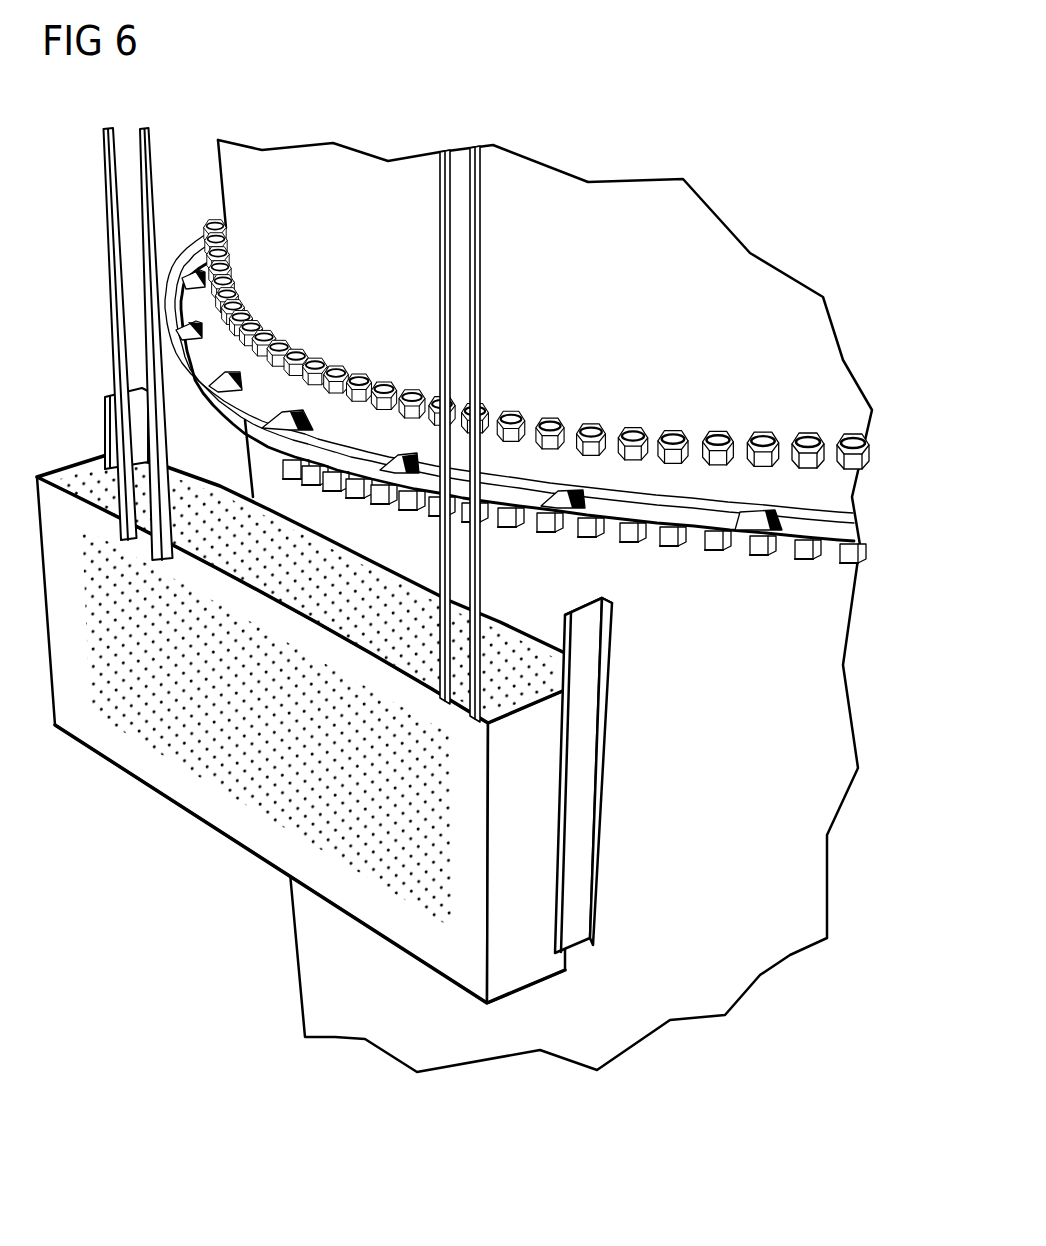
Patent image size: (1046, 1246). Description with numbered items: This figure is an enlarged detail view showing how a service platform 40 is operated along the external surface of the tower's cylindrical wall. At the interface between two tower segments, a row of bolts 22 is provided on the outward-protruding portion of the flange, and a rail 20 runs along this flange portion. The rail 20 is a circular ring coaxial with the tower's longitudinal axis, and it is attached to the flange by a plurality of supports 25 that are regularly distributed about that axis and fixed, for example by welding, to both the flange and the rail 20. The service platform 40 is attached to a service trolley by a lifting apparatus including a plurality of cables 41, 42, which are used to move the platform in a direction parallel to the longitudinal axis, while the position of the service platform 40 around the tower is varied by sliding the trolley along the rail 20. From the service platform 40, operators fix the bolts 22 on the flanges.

The rail 20 is at (737, 541).
The bolts 22 is at (817, 444).
The supports 25 is at (260, 410).
The service platform 40 is at (518, 948).
The cable 41 is at (112, 291).
The cable 42 is at (486, 273).